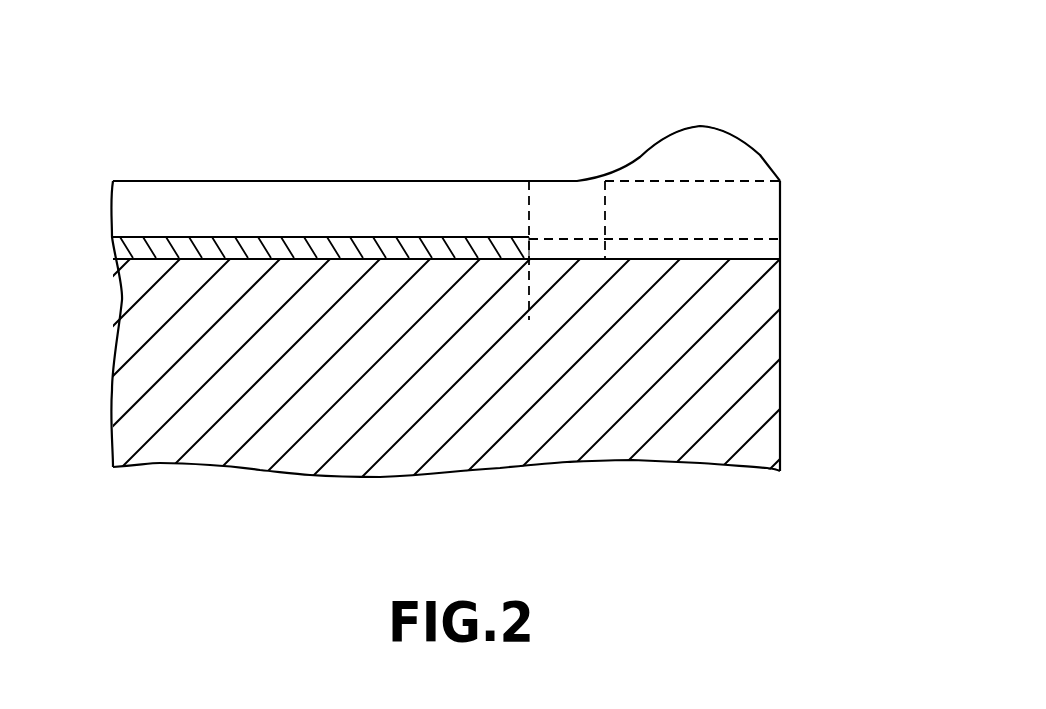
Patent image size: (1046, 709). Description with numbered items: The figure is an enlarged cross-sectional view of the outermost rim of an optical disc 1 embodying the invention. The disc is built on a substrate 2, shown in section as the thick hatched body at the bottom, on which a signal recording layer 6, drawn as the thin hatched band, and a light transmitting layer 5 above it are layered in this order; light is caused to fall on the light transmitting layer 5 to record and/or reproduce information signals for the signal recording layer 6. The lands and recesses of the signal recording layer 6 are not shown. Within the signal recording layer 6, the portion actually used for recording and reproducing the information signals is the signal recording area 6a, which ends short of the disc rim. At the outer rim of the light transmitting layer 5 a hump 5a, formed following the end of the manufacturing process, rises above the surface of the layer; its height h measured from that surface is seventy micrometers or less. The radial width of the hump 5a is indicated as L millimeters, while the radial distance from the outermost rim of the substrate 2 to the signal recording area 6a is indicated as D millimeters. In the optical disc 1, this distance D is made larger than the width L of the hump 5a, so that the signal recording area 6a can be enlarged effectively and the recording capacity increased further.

The optical disc 1 is at (820, 152).
The substrate 2 is at (748, 367).
The light transmitting layer 5 is at (768, 192).
The hump 5a is at (727, 142).
The signal recording layer 6 is at (425, 241).
The signal recording area 6a is at (520, 209).
The width of the hump L is at (768, 210).
The height of the hump h is at (700, 138).
The distance from the outermost rim of the substrate to the signal recording area D is at (768, 302).